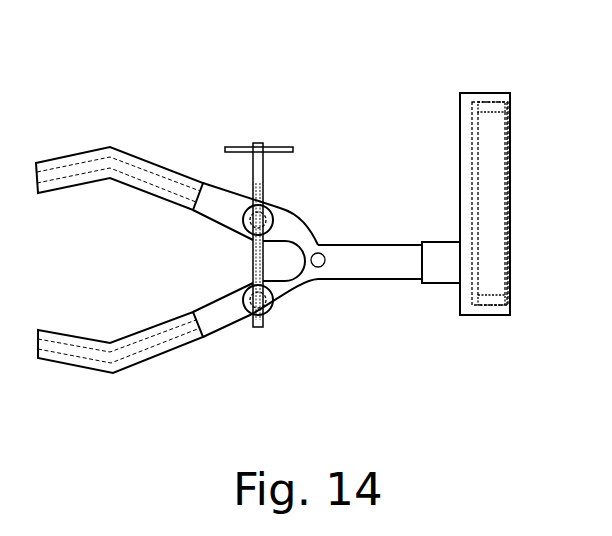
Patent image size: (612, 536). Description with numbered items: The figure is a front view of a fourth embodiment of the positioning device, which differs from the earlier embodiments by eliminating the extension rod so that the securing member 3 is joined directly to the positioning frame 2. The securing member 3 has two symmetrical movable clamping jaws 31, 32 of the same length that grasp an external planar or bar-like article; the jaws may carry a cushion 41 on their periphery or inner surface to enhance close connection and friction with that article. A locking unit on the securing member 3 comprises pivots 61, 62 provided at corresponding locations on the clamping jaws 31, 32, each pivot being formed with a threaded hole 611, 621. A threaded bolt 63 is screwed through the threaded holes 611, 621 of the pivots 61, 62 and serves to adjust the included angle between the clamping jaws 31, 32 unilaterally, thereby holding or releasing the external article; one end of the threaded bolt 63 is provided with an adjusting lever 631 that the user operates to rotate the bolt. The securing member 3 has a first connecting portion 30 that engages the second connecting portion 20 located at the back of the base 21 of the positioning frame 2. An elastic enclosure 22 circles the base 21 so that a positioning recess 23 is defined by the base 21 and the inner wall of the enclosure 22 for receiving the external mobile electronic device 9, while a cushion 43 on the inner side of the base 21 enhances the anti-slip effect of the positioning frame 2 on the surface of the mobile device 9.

The positioning frame 2 is at (470, 320).
The securing member 3 is at (310, 318).
The external mobile electronic device 9 is at (504, 278).
The second connecting portion 20 is at (437, 250).
The base 21 is at (465, 170).
The elastic enclosure 22 is at (490, 93).
The positioning recess 23 is at (506, 108).
The first connecting portion 30 is at (372, 268).
The clamping jaw 31 is at (143, 162).
The clamping jaw 32 is at (140, 373).
The cushion 41 is at (93, 337).
The cushion 43 is at (480, 98).
The pivot 61 is at (277, 228).
The pivot 62 is at (250, 321).
The threaded bolt 63 is at (264, 170).
The threaded hole 611 is at (255, 246).
The threaded hole 621 is at (255, 278).
The adjusting lever 631 is at (268, 149).